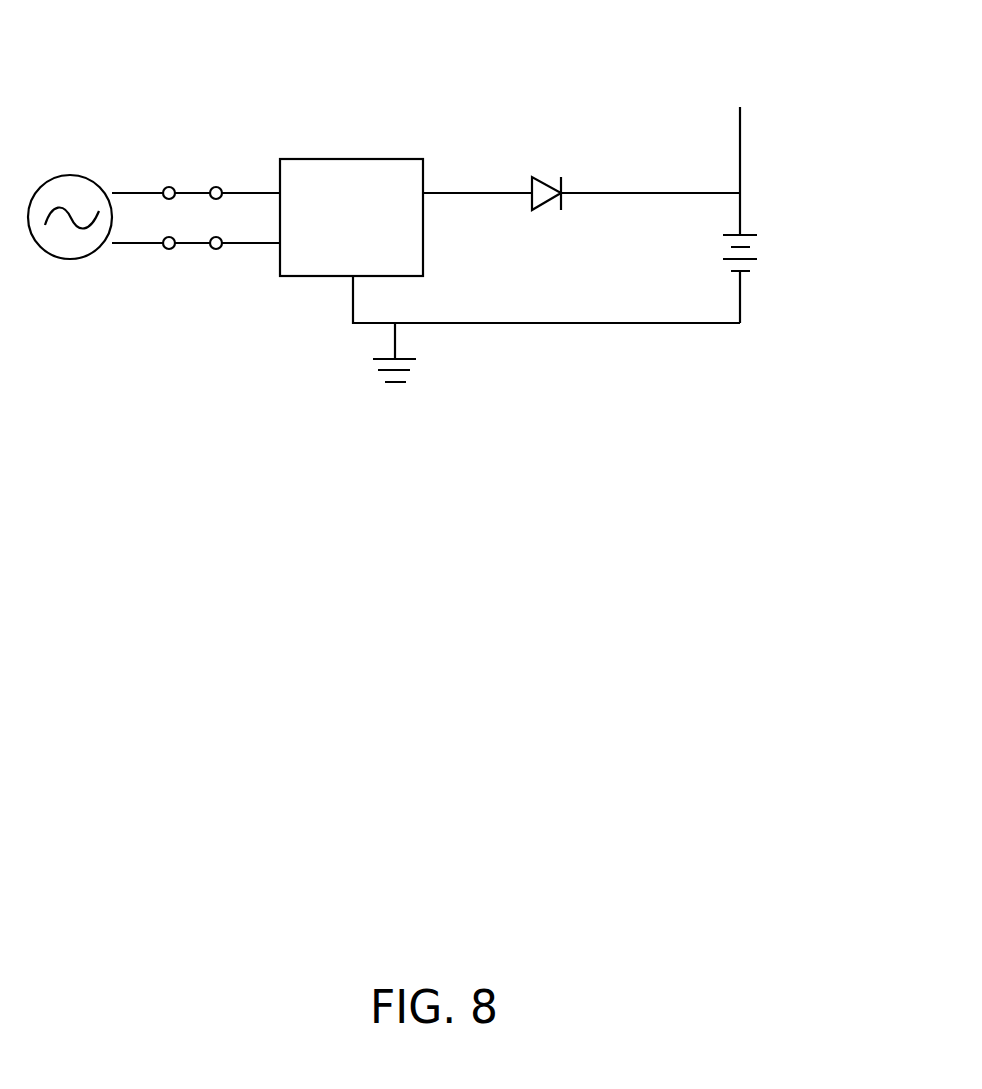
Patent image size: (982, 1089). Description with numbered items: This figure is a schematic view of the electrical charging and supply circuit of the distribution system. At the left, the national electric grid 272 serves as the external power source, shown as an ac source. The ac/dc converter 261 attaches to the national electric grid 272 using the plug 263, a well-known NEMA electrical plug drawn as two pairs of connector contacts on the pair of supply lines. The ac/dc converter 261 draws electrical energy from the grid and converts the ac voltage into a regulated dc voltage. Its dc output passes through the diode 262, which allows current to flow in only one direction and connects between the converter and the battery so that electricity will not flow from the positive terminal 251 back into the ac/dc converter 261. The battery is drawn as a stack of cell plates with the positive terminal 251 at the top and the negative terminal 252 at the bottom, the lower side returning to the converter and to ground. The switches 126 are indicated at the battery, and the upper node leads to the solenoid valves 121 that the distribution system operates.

The valves 121 is at (753, 55).
The switches 126 is at (752, 249).
The positive terminal 251 is at (740, 213).
The negative terminal 252 is at (740, 293).
The ac/dc converter 261 is at (350, 159).
The diode 262 is at (548, 170).
The plug 263 is at (201, 193).
The national electric grid 272 is at (70, 259).